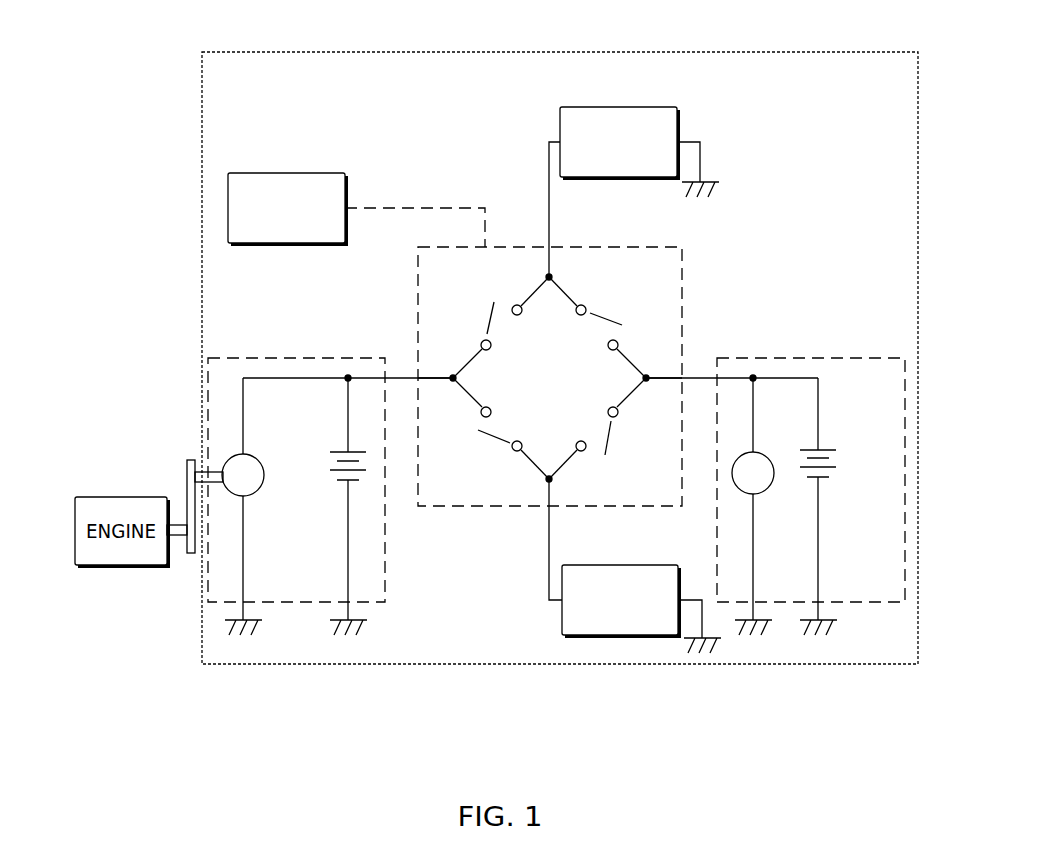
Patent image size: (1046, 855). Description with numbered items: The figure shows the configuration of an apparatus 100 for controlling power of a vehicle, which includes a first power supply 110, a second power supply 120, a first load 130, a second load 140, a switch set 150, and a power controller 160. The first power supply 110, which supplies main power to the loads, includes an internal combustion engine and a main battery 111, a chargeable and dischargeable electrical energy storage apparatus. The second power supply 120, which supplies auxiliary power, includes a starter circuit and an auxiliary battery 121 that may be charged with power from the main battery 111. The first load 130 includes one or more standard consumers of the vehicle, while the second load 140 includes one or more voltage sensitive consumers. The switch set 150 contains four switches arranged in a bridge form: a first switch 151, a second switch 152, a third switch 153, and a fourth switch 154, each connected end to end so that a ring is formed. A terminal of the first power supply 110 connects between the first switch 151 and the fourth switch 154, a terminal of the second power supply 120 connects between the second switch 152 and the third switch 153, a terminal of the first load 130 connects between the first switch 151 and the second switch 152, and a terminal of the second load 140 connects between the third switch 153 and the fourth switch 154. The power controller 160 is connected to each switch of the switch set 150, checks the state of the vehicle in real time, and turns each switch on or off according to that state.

The apparatus for controlling power of a vehicle 100 is at (805, 50).
The first power supply 110 is at (302, 312).
The main battery 111 is at (303, 506).
The second power supply 120 is at (822, 312).
The auxiliary battery 121 is at (860, 519).
The first load 130 is at (662, 104).
The second load 140 is at (665, 563).
The switch set 150 is at (460, 506).
The first switch 151 is at (480, 294).
The second switch 152 is at (620, 294).
The third switch 153 is at (618, 460).
The fourth switch 154 is at (475, 460).
The power controller 160 is at (328, 172).